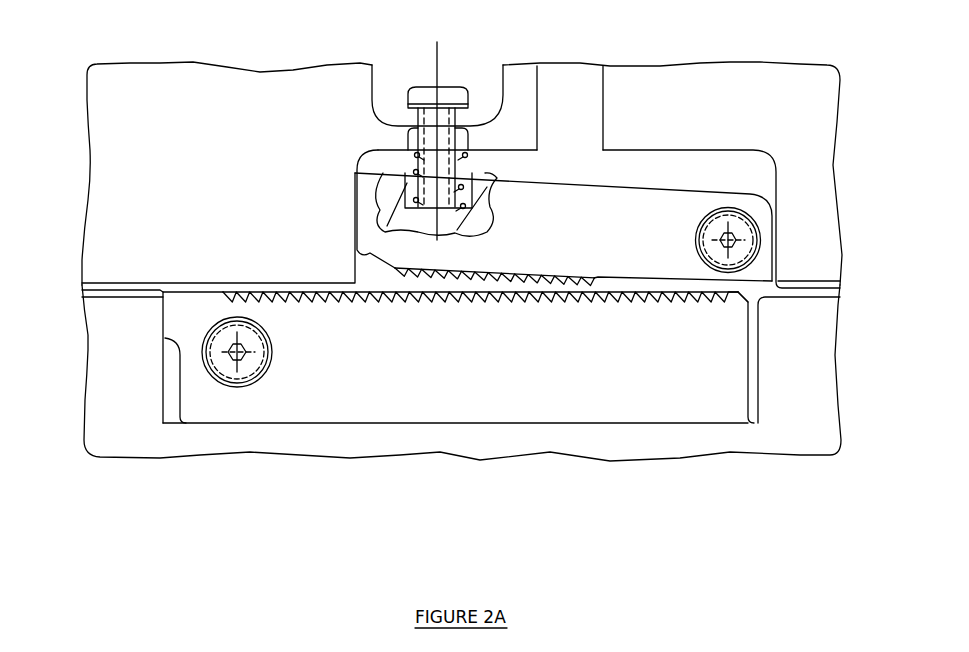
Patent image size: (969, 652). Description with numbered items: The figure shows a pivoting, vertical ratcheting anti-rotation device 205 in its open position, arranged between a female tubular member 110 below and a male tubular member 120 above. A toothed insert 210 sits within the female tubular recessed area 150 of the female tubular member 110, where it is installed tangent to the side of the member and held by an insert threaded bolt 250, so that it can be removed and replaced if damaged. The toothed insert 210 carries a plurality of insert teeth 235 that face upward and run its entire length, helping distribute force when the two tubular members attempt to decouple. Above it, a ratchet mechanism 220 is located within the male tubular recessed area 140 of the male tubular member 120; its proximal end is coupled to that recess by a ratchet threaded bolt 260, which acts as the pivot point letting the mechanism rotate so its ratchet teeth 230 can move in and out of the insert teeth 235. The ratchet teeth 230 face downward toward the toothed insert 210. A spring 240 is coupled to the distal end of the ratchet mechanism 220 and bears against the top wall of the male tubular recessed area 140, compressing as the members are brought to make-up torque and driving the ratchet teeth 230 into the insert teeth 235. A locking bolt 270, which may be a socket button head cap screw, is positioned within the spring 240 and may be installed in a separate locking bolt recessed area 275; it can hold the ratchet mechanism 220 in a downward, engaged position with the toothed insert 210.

The female tubular member 110 is at (118, 393).
The male tubular member 120 is at (113, 187).
The male tubular recessed area 140 is at (755, 167).
The female tubular recessed area 150 is at (172, 408).
The pivoting, vertical ratcheting anti-rotation device 205 is at (140, 543).
The toothed insert 210 is at (585, 403).
The ratchet mechanism 220 is at (616, 184).
The ratchet teeth 230 is at (420, 268).
The insert teeth 235 is at (712, 291).
The spring 240 is at (468, 162).
The insert threaded bolt 250 is at (237, 353).
The ratchet threaded bolt 260 is at (737, 235).
The locking bolt 270 is at (438, 87).
The locking bolt recessed area 275 is at (483, 90).